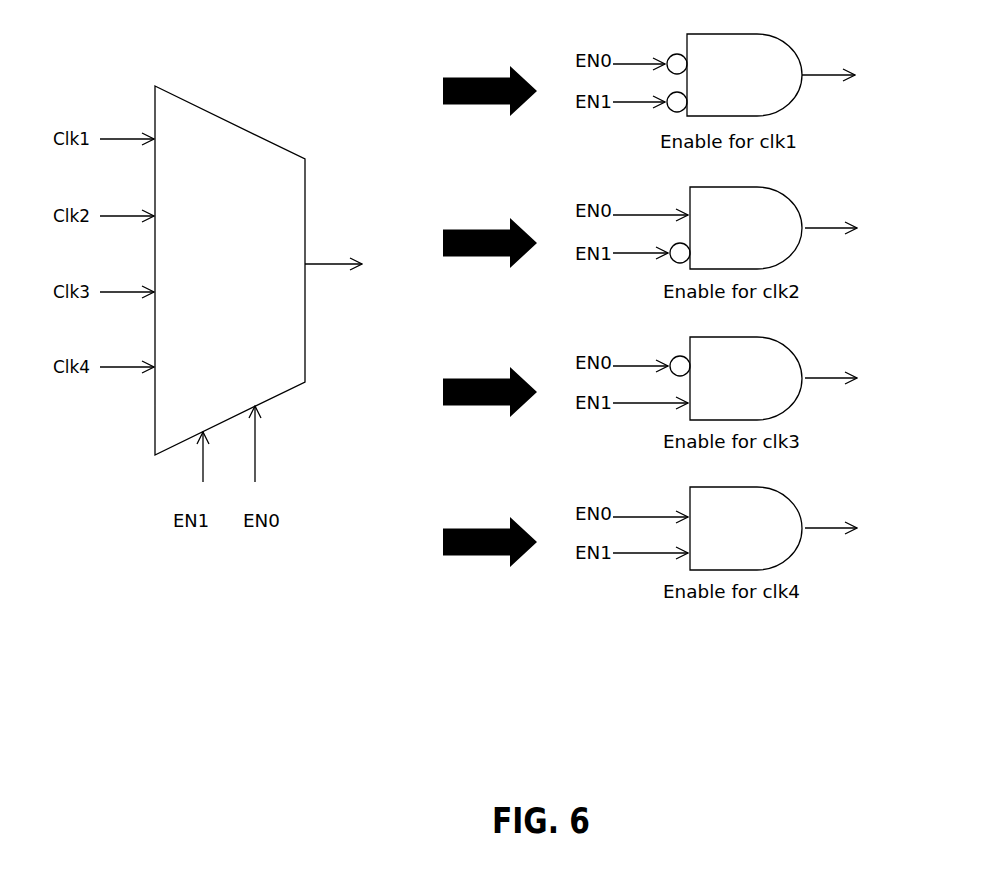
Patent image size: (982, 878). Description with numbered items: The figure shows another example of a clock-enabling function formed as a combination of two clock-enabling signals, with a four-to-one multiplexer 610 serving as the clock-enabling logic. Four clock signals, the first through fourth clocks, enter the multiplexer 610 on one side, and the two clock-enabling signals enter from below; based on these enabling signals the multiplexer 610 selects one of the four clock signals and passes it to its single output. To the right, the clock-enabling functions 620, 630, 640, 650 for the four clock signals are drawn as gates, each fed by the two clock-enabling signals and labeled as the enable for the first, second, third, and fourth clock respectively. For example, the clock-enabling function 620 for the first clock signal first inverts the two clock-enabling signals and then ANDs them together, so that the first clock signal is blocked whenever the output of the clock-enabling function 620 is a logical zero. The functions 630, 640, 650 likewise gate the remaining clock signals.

The 4-to-1 multiplexer 610 is at (242, 287).
The clock-enabling function 620 is at (748, 86).
The clock-enabling function 630 is at (748, 251).
The clock-enabling function 640 is at (748, 384).
The clock-enabling function 650 is at (748, 534).